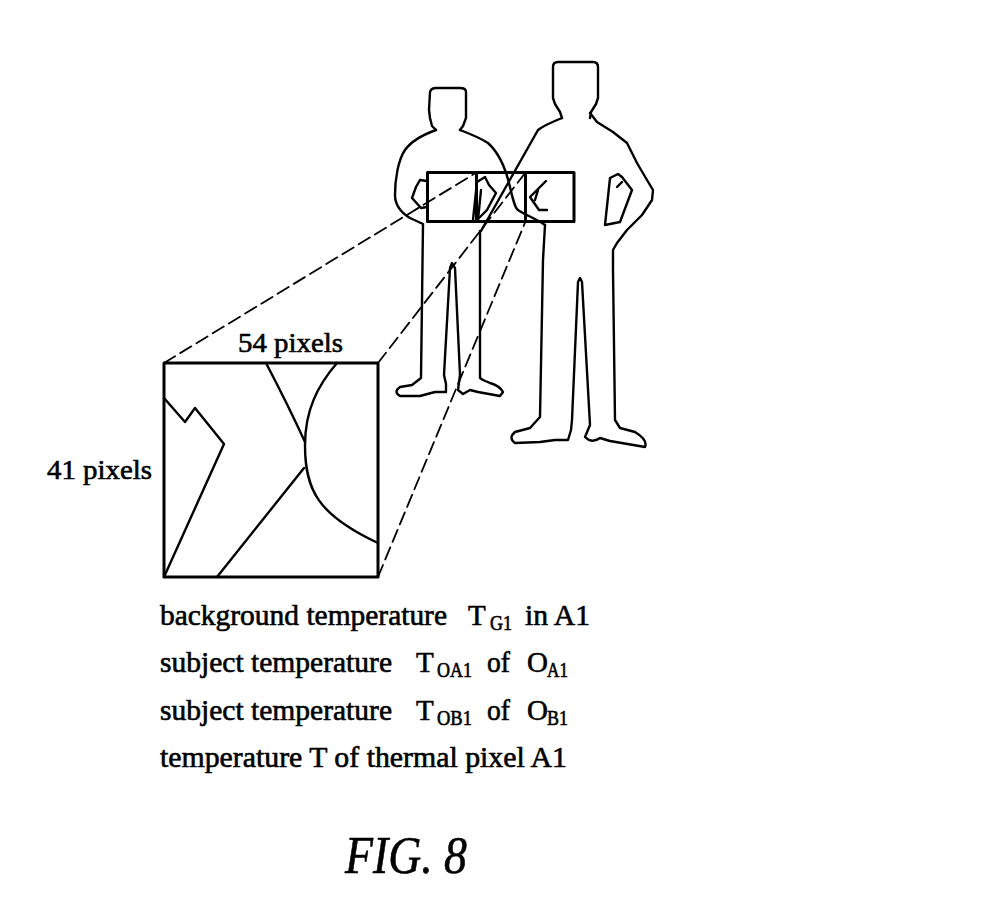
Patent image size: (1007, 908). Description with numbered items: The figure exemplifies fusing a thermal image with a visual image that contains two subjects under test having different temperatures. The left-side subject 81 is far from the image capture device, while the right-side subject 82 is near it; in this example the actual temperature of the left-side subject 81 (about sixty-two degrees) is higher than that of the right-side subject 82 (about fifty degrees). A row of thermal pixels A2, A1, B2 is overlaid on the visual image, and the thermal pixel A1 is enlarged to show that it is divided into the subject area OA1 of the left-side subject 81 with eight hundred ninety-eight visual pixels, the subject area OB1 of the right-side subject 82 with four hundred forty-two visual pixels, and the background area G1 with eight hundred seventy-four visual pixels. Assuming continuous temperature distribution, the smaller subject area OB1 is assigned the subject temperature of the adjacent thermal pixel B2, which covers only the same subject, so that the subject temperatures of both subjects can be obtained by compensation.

The left-side subject 81 is at (394, 111).
The right-side subject 82 is at (652, 96).
The thermal pixel A1 is at (501, 184).
The thermal pixel A2 is at (452, 184).
The adjacent thermal pixel B2 is at (550, 184).
The subject area of the left-side subject OA1 is at (234, 470).
The subject area of the right-side subject OB1 is at (341, 453).
The background area G1 is at (265, 522).